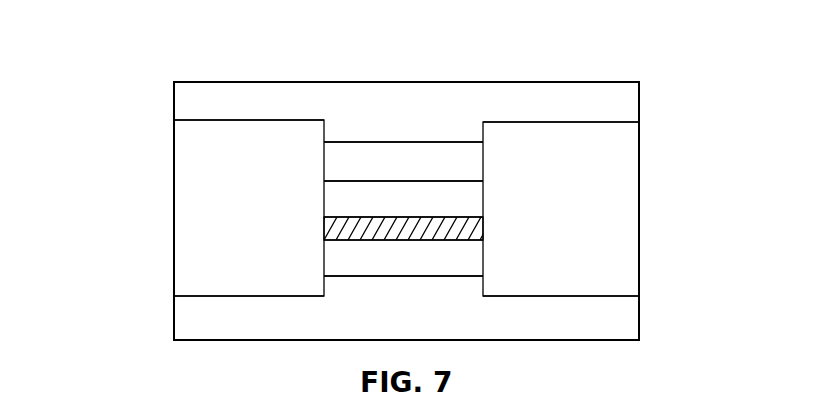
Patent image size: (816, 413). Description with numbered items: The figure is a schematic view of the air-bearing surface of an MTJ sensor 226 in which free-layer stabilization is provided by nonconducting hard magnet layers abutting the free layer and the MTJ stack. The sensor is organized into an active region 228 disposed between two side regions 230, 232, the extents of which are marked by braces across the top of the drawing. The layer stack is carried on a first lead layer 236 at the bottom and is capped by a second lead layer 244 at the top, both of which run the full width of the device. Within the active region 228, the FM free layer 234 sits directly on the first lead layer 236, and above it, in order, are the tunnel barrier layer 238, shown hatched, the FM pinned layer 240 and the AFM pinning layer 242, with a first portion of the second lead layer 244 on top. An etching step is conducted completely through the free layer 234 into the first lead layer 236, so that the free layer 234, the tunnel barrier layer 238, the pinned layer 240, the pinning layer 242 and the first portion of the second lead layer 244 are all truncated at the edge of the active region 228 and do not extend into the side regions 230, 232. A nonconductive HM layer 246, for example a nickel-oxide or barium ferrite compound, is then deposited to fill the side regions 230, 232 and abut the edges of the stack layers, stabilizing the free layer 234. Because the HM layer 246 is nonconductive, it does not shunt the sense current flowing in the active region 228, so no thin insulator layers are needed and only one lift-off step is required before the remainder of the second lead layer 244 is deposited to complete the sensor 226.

The MTJ sensor 226 is at (137, 93).
The active region 228 is at (482, 73).
The side region 230 is at (328, 73).
The side region 232 is at (638, 73).
The FM free layer 234 is at (477, 262).
The first lead (L1) layer 236 is at (630, 319).
The tunnel barrier layer 238 is at (477, 228).
The FM pinned layer 240 is at (477, 192).
The AFM pinning layer 242 is at (477, 157).
The second lead (L2) layer 244 is at (632, 107).
The nonconductive HM layer 246 is at (183, 160).